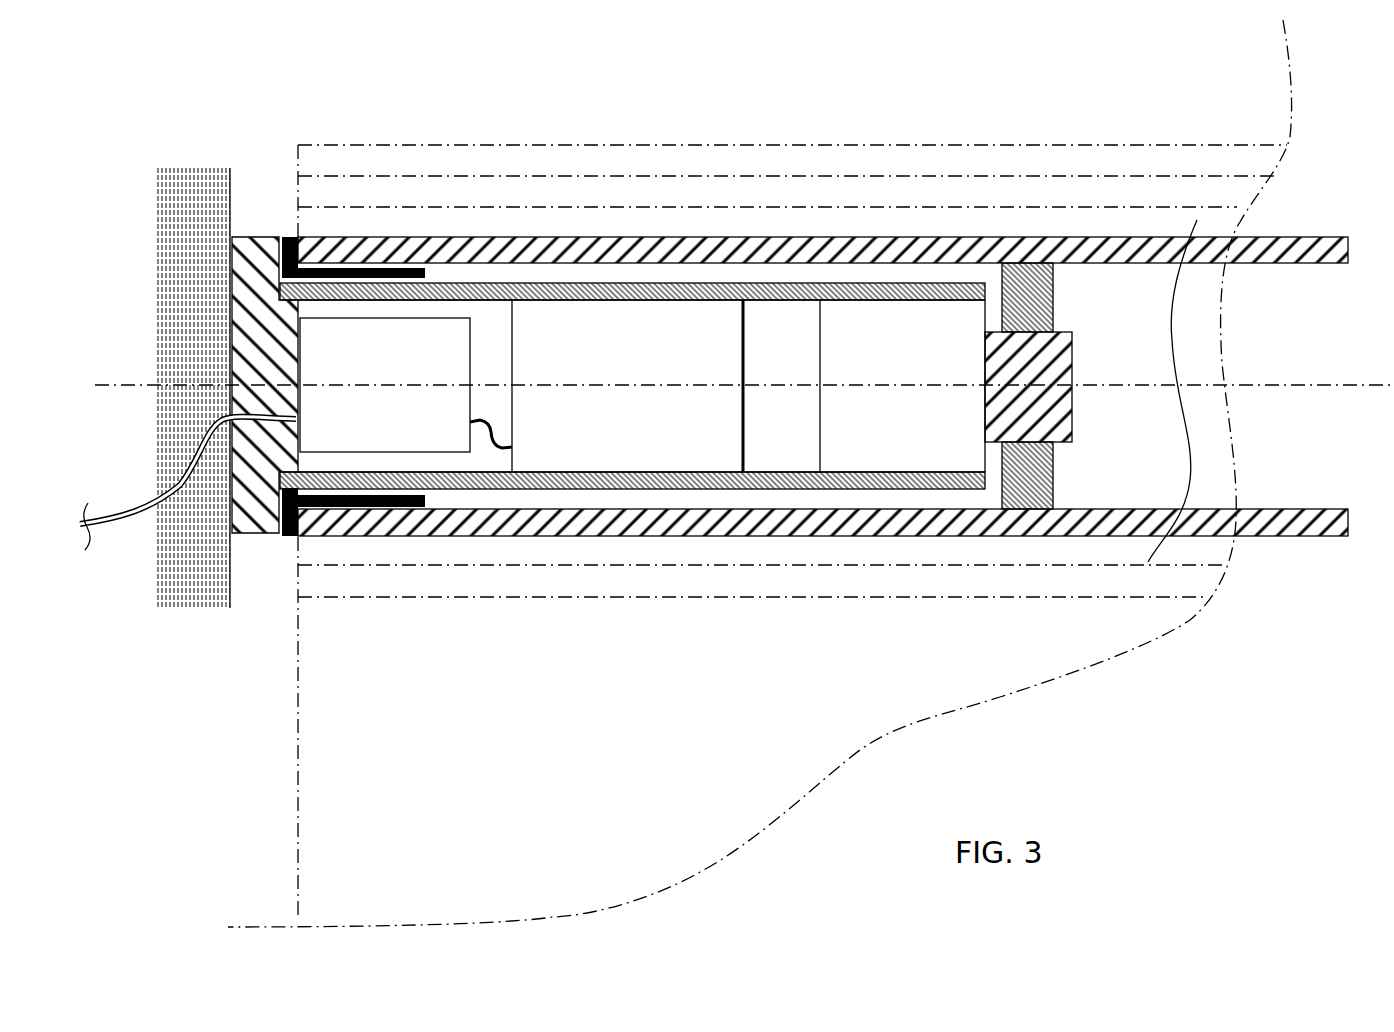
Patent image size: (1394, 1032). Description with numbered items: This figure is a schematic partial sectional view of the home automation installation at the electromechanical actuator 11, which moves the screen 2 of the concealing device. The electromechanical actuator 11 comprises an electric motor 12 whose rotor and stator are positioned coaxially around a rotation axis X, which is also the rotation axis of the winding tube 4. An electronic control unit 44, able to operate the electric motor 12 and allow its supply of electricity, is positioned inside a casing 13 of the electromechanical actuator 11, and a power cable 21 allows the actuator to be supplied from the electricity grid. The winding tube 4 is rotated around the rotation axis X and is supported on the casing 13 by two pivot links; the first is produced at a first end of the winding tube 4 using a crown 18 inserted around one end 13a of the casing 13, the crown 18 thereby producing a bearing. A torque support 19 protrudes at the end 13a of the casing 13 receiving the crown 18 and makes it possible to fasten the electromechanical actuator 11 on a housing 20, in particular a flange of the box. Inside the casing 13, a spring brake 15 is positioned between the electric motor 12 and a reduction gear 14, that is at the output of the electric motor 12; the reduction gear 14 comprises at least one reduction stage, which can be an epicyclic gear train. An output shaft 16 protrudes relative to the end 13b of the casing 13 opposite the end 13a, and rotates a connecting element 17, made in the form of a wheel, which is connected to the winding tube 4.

The screen 2 is at (1135, 162).
The winding tube 4 is at (1313, 237).
The electromechanical actuator 11 is at (723, 488).
The electric motor 12 is at (660, 337).
The casing 13 is at (580, 290).
The end of the casing 13a is at (278, 480).
The end of the casing 13b is at (986, 478).
The reduction gear 14 is at (913, 337).
The spring brake 15 is at (808, 337).
The output shaft 16 is at (1040, 340).
The connecting element 17 is at (1037, 477).
The crown 18 is at (333, 263).
The torque support 19 is at (258, 263).
The housing 20 is at (185, 200).
The power cable 21 is at (125, 530).
The electronic control unit 44 is at (432, 340).
The rotation axis X is at (623, 387).